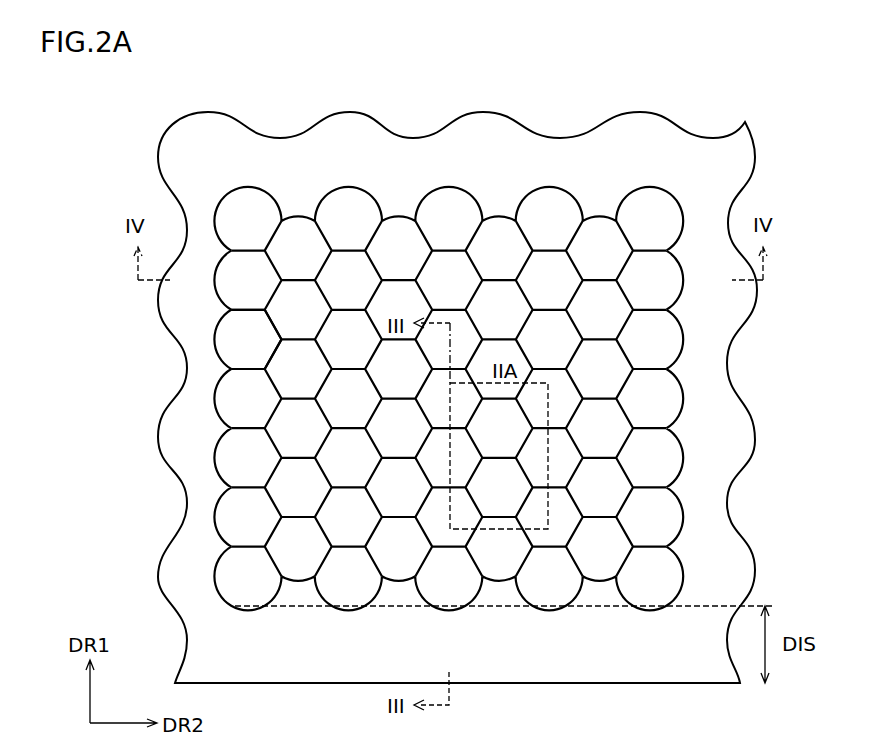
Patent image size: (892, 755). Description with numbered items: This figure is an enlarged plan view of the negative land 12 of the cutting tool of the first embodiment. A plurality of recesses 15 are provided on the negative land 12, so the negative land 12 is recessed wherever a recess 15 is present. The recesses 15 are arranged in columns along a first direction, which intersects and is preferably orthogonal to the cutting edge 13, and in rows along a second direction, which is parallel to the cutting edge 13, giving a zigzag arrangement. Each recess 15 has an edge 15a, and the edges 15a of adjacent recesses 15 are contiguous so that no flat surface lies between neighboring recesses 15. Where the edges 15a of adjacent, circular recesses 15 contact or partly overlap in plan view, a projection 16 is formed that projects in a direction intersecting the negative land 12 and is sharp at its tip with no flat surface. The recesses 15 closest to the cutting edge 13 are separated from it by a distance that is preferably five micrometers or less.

The negative land 12 is at (507, 138).
The cutting edge 13 is at (493, 685).
The recess 15 is at (473, 399).
The edge 15a is at (683, 520).
The projection 16 is at (250, 367).